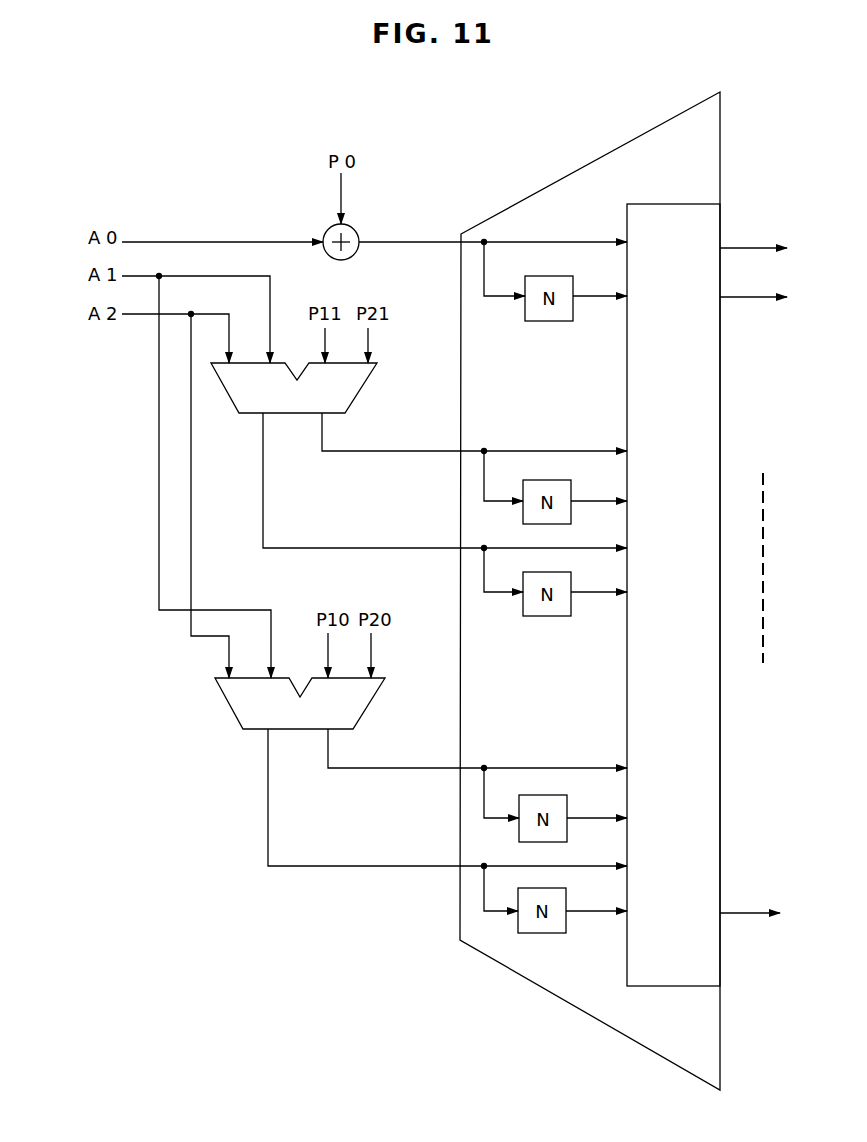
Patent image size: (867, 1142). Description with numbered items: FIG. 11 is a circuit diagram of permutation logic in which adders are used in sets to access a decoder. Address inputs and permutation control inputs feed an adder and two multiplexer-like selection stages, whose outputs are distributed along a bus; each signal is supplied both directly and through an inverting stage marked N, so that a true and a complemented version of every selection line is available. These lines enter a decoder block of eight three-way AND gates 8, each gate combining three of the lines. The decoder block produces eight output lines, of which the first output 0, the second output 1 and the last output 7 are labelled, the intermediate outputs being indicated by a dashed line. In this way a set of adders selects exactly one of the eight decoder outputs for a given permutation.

The eight three-way AND gates 8 is at (673, 595).
The output 0 is at (753, 233).
The output 1 is at (753, 282).
The output 7 is at (750, 898).